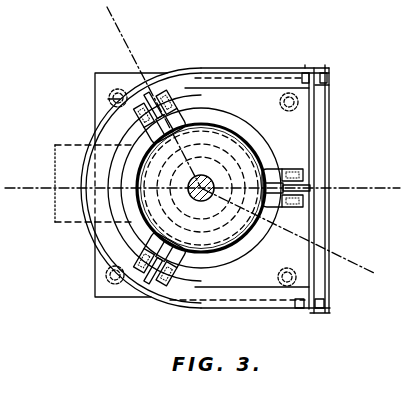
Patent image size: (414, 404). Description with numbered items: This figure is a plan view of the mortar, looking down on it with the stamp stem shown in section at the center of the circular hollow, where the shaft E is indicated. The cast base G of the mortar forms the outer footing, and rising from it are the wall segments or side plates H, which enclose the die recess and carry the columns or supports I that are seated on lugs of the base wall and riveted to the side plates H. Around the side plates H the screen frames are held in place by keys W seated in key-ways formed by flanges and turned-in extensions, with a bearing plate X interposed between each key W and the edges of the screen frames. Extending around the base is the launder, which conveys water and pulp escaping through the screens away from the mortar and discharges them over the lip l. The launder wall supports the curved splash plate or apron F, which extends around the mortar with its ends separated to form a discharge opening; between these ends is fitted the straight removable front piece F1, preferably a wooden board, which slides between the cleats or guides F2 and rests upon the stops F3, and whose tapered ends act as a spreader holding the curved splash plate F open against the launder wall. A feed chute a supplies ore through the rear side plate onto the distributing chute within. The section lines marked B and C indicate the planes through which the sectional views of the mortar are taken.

The section line C- C is at (253, 102).
The section line B- B is at (189, 220).
The curved splash plate F is at (232, 70).
The front piece F1 is at (322, 104).
The cleats or guides F2 is at (330, 78).
The stops F3 is at (330, 88).
The lip l is at (108, 99).
The base of the mortar G is at (118, 284).
The feed chute a is at (95, 183).
The wall segments or side plates H is at (252, 144).
The shaft E is at (198, 196).
The columns or supports I is at (261, 93).
The keys W is at (155, 108).
The bearing plate X is at (165, 126).